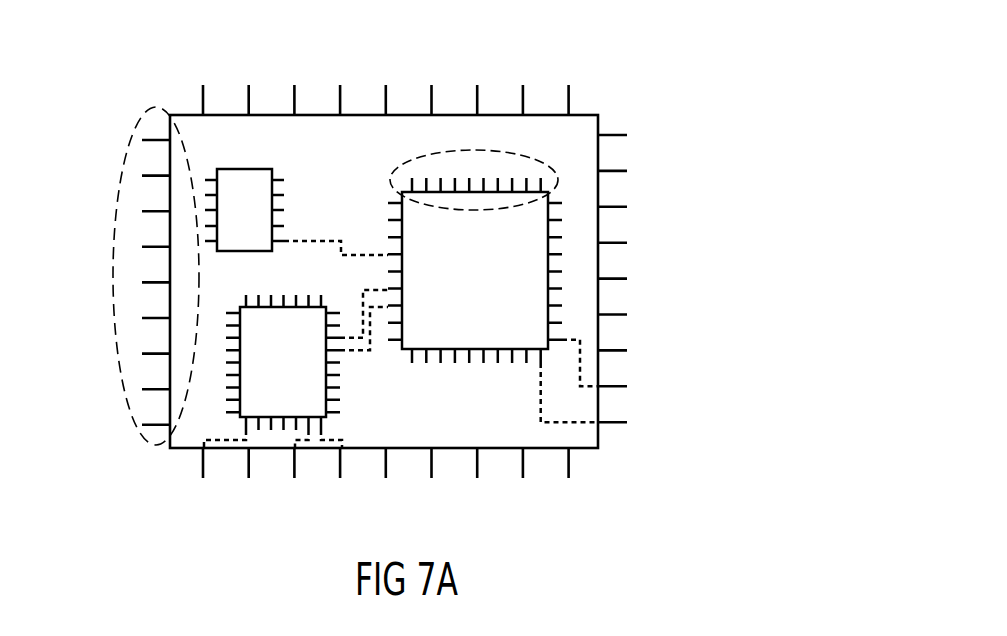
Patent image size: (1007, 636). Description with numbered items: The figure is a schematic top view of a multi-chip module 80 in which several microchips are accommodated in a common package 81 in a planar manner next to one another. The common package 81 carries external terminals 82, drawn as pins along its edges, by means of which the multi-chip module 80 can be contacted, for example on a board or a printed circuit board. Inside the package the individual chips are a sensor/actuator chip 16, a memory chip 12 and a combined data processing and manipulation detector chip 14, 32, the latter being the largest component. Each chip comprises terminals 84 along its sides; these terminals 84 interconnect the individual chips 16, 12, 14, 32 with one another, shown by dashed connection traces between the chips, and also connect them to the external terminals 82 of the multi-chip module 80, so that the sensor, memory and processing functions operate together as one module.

The multi-chip module 80 is at (591, 60).
The common package 81 is at (598, 448).
The external terminals 82 is at (112, 252).
The terminals 84 is at (523, 157).
The sensor/actuator chip 16 is at (237, 178).
The memory chip 12 is at (313, 391).
The data processing chip 14 is at (493, 301).
The manipulation detector chip 32 is at (478, 335).